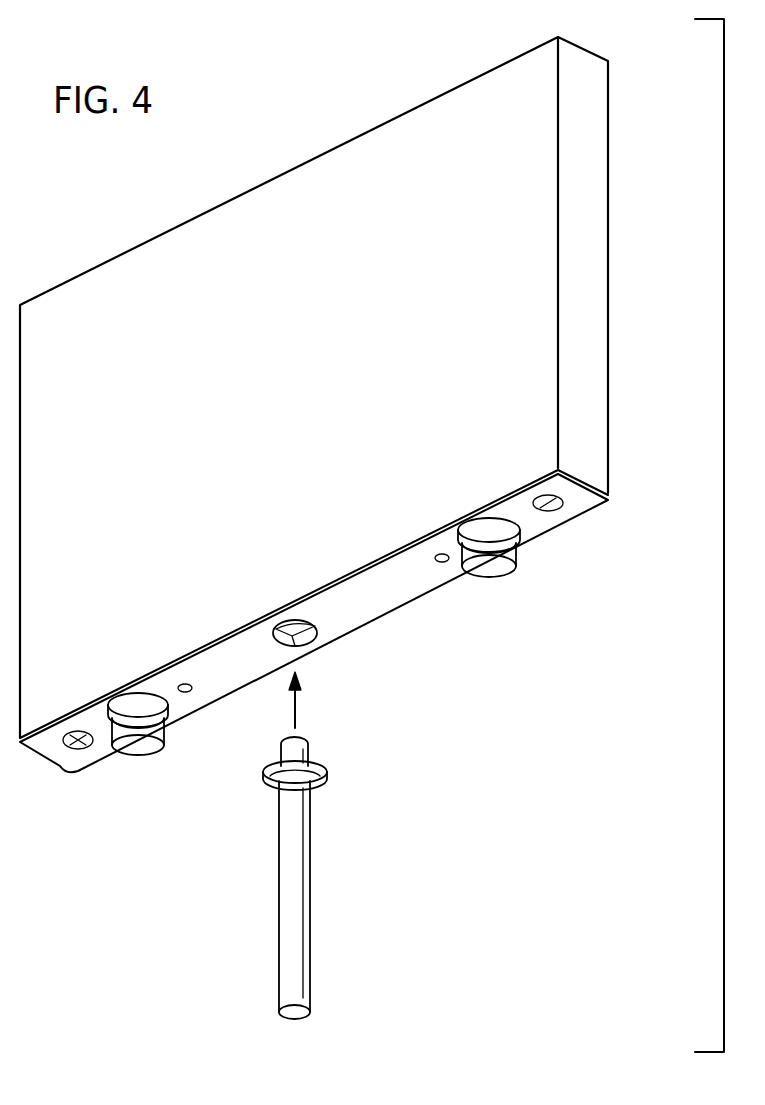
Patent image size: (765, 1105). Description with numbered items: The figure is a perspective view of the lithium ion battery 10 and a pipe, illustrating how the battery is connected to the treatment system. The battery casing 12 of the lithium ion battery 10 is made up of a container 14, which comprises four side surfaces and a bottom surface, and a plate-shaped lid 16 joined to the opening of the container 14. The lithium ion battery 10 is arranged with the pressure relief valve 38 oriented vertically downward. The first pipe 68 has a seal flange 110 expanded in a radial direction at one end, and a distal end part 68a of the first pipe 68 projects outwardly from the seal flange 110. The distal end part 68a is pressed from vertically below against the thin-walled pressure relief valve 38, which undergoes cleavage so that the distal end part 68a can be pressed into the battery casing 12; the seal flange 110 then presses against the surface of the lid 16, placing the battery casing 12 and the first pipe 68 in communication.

The lithium ion battery 10 is at (622, 208).
The battery casing 12 is at (356, 617).
The container 14 is at (597, 472).
The lid 16 is at (657, 463).
The pressure relief valve 38 is at (308, 640).
The first pipe 68 is at (283, 883).
The distal end part 68a is at (283, 753).
The seal flange 110 is at (318, 793).